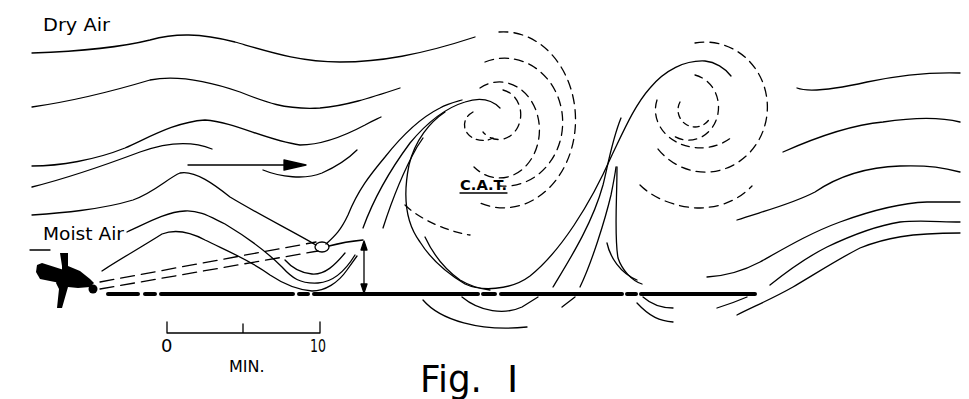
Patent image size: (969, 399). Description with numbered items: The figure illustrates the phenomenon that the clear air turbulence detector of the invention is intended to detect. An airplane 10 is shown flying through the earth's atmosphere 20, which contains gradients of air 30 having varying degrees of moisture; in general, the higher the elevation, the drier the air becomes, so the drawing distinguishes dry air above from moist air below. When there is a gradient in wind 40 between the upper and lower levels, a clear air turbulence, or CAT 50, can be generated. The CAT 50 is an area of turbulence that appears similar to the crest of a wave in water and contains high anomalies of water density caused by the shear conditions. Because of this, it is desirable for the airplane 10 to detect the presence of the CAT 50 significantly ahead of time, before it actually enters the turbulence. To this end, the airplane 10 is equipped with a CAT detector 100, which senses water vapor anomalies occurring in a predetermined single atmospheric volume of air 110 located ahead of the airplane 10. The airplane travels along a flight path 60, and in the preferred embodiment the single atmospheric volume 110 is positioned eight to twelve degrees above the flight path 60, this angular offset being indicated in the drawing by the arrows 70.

The airplane 10 is at (71, 306).
The earth's atmosphere 20 is at (854, 73).
The gradients of air 30 is at (107, 93).
The wind 40 is at (232, 164).
The clear air turbulence (CAT) 50 is at (510, 250).
The flight path 60 is at (685, 294).
The arrows 70 is at (366, 262).
The CAT detector 100 is at (93, 293).
The single atmospheric volume of air 110 is at (320, 242).